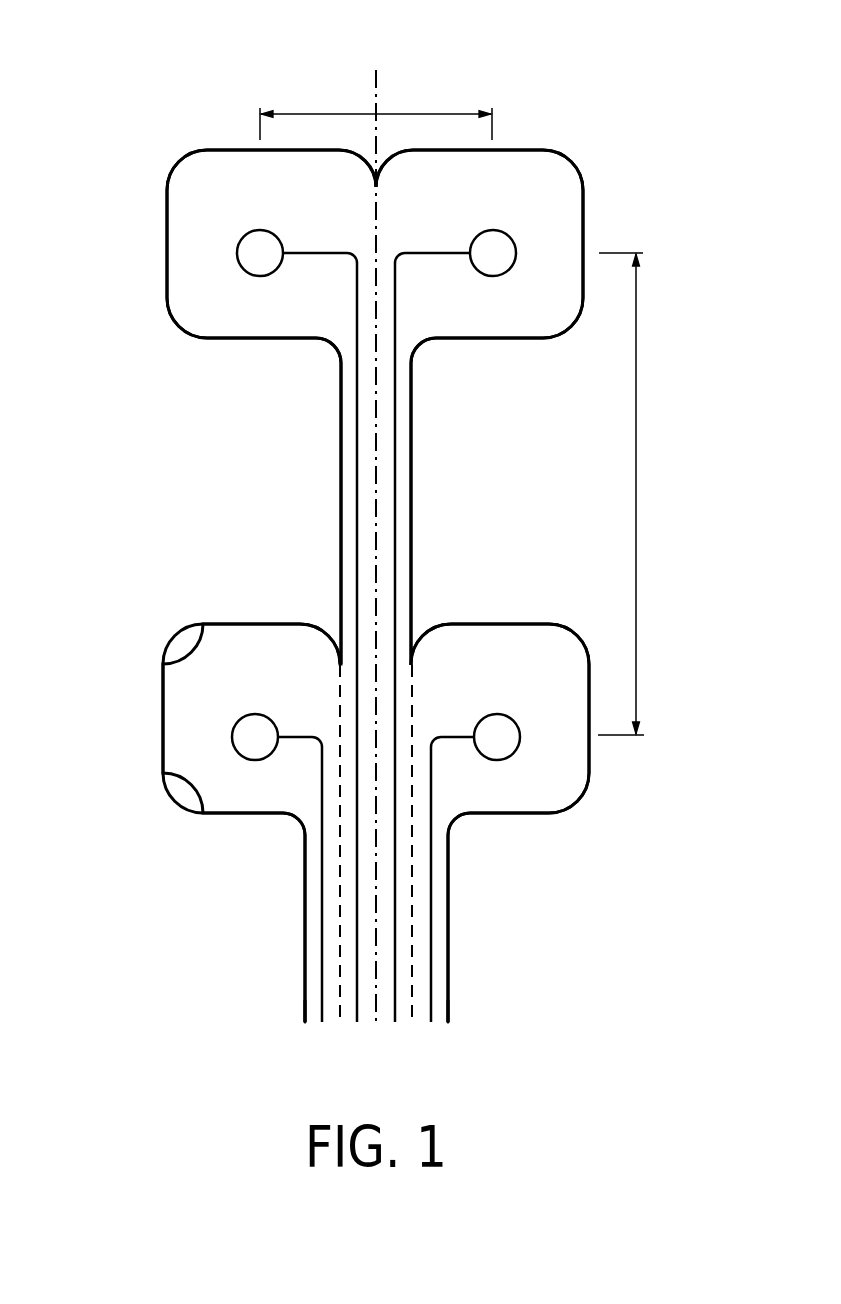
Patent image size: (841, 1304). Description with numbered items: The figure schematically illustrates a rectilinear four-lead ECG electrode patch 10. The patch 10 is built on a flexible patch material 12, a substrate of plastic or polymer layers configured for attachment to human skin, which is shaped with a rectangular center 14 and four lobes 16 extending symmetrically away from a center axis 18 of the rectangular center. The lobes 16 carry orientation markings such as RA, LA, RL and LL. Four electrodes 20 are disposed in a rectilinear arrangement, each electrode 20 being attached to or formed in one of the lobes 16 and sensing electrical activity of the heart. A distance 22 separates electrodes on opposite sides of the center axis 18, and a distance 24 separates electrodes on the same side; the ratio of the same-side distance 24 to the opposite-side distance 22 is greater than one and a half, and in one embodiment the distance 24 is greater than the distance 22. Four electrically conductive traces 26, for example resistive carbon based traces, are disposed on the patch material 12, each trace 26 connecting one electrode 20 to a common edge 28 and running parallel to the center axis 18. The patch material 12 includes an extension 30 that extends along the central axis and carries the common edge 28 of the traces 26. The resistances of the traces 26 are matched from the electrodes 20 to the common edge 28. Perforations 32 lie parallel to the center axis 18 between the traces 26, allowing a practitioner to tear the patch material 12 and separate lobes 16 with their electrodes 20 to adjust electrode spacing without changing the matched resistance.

The ECG electrode patch 10 is at (129, 84).
The patch material 12 is at (233, 327).
The rectangular center 14 is at (460, 504).
The lobes 16 is at (219, 165).
The center axis 18 is at (377, 79).
The electrodes 20 is at (260, 232).
The distance between electrodes on opposite sides 22 is at (333, 108).
The distance between electrodes on a same side 24 is at (637, 494).
The electrically conductive traces 26 is at (355, 317).
The common edge 28 is at (418, 1037).
The extension 30 is at (490, 944).
The perforations 32 is at (377, 220).